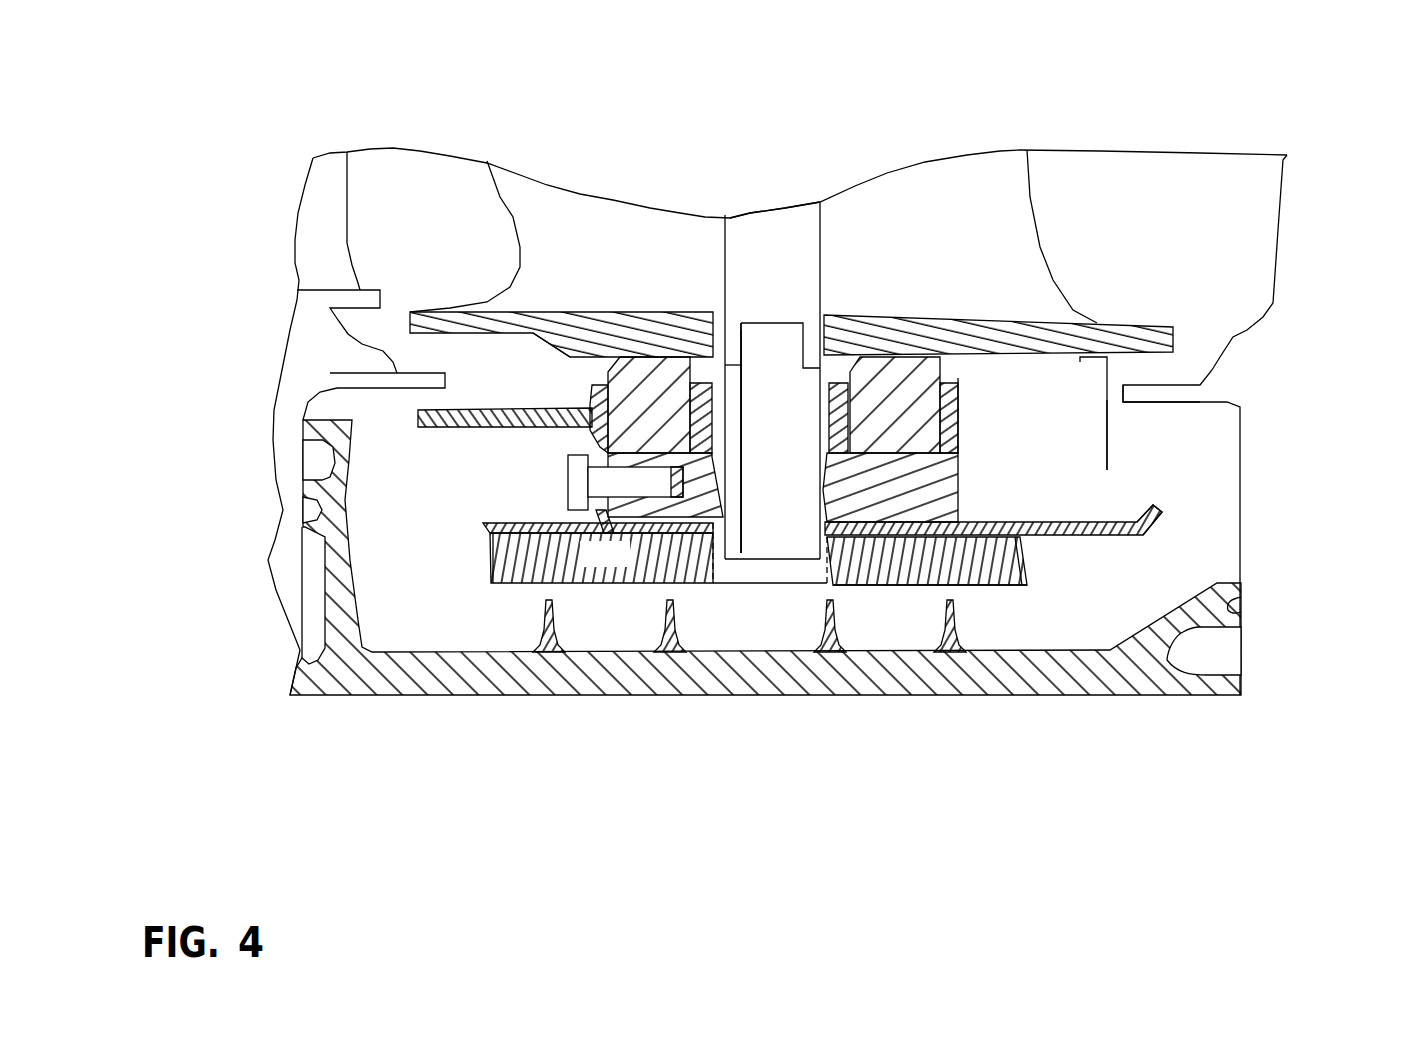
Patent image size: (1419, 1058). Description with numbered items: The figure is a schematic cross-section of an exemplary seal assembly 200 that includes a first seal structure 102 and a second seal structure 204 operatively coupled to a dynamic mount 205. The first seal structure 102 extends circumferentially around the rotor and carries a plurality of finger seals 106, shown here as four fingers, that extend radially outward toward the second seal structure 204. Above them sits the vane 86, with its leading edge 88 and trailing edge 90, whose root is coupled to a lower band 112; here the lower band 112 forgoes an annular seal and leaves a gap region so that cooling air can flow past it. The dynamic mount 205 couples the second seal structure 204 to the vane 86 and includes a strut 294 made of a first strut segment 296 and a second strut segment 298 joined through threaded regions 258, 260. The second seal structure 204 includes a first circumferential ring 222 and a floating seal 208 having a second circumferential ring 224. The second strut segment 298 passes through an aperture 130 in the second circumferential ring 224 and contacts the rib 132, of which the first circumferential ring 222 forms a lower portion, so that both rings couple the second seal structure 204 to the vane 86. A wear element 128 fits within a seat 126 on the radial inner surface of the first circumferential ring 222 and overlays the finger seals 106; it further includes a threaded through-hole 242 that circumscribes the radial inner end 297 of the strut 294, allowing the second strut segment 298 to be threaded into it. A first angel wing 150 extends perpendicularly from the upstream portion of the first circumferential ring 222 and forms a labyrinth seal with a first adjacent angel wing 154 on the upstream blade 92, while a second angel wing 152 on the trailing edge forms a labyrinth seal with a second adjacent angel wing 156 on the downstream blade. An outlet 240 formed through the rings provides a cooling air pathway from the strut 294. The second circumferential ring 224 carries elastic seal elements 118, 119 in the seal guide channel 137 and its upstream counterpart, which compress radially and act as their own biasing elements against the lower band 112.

The seal assembly 200 is at (270, 71).
The dynamic mount 205 is at (620, 105).
The lower band 112 is at (643, 312).
The radial inner end 297 is at (741, 323).
The strut 294 is at (758, 213).
The leading edge 88 is at (465, 203).
The rib 132 is at (1025, 506).
The trailing edge 90 is at (1069, 137).
The vane 86 is at (929, 220).
The upstream blade 92 is at (341, 258).
The seal element 119 is at (422, 362).
The second seal guide channel 137 is at (364, 355).
The first adjacent angel wing 154 is at (377, 408).
The first angel wing 150 is at (418, 417).
The second seal structure 204 is at (694, 557).
The first strut segment 296 is at (800, 291).
The threaded region 258 is at (830, 318).
The threaded region 260 is at (742, 347).
The second strut segment 298 is at (798, 514).
The seal element 118 is at (958, 379).
The aperture 130 is at (958, 428).
The second circumferential ring 224 is at (958, 469).
The second adjacent angel wing 156 is at (1259, 428).
The floating seal 208 is at (1213, 475).
The second angel wing 152 is at (1242, 549).
The first circumferential ring 222 is at (1216, 604).
The seat 126 is at (1087, 669).
The wear element 128 is at (631, 569).
The outlet 240 is at (568, 475).
The through-hole 242 is at (940, 694).
The finger seals 106 is at (493, 710).
The first seal structure 102 is at (447, 760).